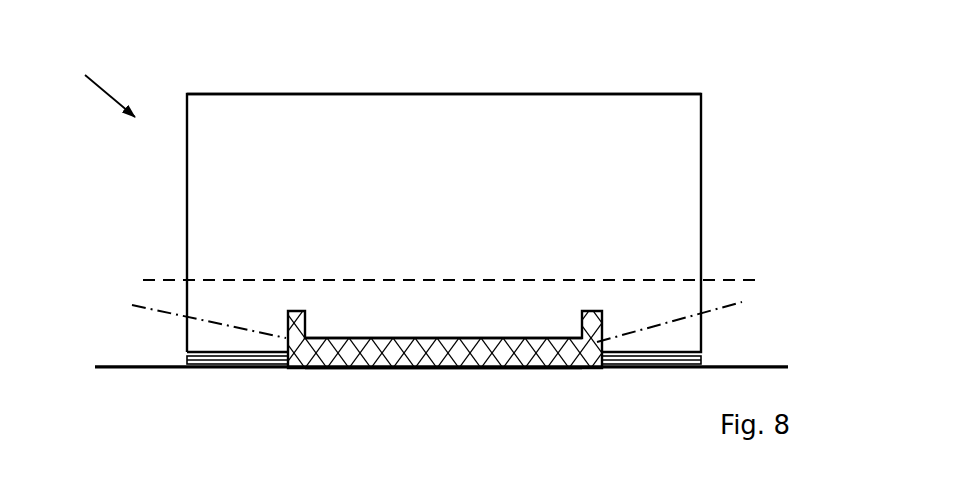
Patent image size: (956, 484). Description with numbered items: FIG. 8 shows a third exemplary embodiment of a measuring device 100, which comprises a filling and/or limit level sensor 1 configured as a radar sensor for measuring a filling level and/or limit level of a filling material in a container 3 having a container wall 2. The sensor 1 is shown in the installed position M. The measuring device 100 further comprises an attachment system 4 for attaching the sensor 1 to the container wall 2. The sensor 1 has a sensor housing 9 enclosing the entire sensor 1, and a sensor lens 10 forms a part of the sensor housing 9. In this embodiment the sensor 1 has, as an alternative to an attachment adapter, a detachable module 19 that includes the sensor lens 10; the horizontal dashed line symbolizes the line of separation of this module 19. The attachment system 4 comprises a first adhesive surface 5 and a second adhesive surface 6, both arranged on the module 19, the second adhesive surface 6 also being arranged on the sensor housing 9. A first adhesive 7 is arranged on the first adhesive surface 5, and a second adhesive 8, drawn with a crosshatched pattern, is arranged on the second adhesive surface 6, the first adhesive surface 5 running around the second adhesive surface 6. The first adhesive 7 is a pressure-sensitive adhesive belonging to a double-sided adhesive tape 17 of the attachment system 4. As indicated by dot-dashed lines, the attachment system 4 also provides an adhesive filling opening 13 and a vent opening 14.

The measuring device 100 is at (743, 72).
The filling and/or limit level sensor 1 is at (737, 120).
The attachment system 4 is at (757, 185).
The sensor housing 9 is at (632, 94).
The detachable module 19 is at (662, 302).
The adhesive filling opening 13 is at (140, 304).
The vent opening 14 is at (742, 302).
The container wall 2 is at (113, 367).
The container 3 is at (155, 367).
The first adhesive surface 5 is at (205, 360).
The first adhesive 7 is at (275, 362).
The double-sided adhesive tape 17 is at (630, 356).
The second adhesive surface 6 is at (348, 348).
The second adhesive 8 is at (505, 348).
The sensor lens 10 is at (438, 323).
The installed position M is at (92, 81).